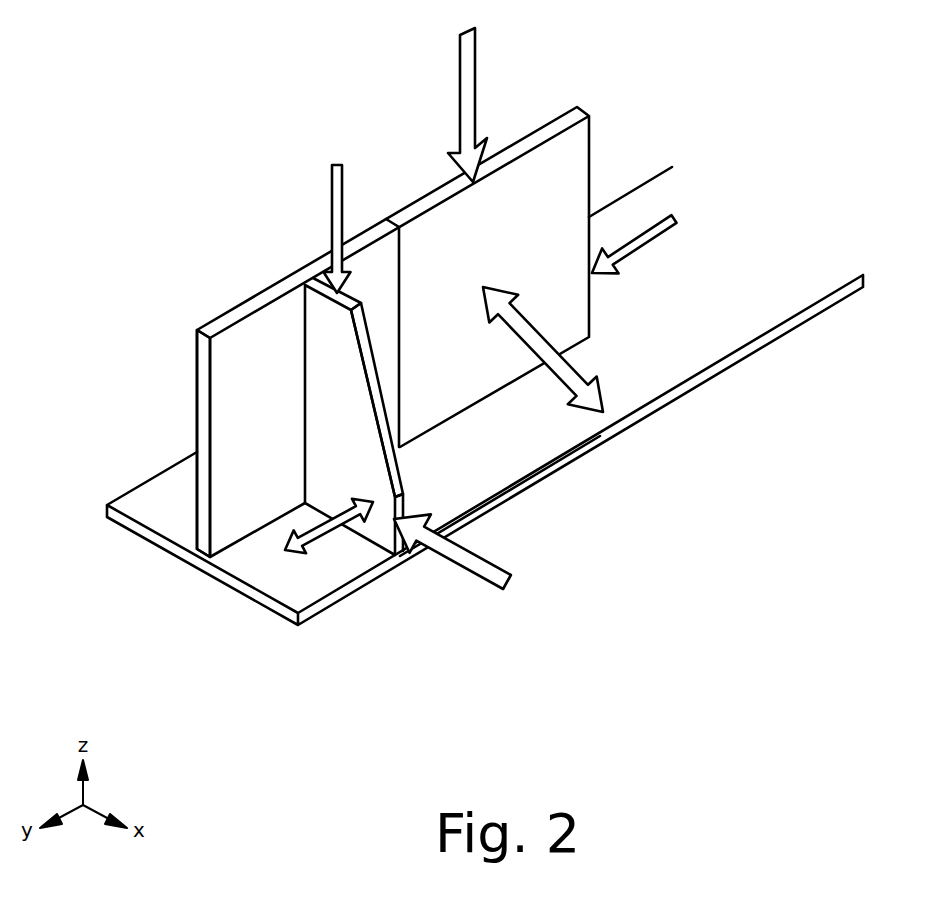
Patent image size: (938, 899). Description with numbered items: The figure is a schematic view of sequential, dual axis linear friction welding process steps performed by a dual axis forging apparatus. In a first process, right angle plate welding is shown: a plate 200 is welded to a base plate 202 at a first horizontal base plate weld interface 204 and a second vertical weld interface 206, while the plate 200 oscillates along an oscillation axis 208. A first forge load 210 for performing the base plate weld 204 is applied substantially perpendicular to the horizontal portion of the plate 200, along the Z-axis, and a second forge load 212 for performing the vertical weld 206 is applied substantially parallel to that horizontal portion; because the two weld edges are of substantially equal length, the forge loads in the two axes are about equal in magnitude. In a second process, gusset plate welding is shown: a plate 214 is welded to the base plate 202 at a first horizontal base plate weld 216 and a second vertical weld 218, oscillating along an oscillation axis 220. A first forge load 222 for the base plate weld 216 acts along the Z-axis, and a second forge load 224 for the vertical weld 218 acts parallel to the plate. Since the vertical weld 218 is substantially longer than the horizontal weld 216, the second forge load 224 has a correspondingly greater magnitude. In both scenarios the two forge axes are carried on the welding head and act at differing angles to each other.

The plate 200 is at (567, 186).
The base plate 202 is at (285, 585).
The first horizontal base plate weld interface 204 is at (475, 405).
The second vertical weld interface 206 is at (403, 277).
The oscillation axis 208 is at (602, 390).
The first forge load 210 is at (475, 73).
The second forge load 212 is at (665, 215).
The plate 214 is at (192, 554).
The first horizontal base plate weld 216 is at (362, 545).
The second vertical weld 218 is at (302, 343).
The oscillation axis 220 is at (323, 532).
The first forge load 222 is at (327, 202).
The second forge load 224 is at (510, 580).